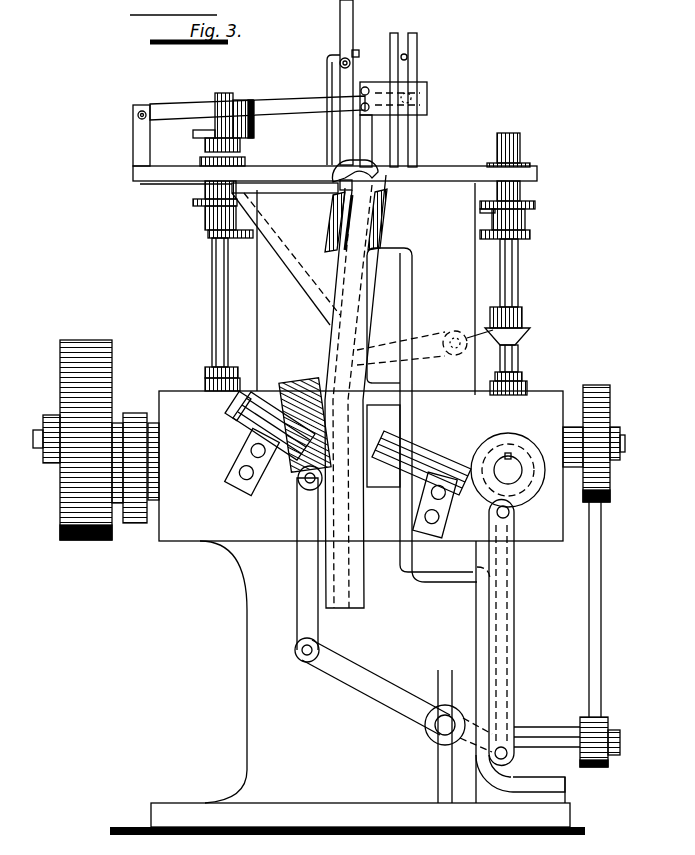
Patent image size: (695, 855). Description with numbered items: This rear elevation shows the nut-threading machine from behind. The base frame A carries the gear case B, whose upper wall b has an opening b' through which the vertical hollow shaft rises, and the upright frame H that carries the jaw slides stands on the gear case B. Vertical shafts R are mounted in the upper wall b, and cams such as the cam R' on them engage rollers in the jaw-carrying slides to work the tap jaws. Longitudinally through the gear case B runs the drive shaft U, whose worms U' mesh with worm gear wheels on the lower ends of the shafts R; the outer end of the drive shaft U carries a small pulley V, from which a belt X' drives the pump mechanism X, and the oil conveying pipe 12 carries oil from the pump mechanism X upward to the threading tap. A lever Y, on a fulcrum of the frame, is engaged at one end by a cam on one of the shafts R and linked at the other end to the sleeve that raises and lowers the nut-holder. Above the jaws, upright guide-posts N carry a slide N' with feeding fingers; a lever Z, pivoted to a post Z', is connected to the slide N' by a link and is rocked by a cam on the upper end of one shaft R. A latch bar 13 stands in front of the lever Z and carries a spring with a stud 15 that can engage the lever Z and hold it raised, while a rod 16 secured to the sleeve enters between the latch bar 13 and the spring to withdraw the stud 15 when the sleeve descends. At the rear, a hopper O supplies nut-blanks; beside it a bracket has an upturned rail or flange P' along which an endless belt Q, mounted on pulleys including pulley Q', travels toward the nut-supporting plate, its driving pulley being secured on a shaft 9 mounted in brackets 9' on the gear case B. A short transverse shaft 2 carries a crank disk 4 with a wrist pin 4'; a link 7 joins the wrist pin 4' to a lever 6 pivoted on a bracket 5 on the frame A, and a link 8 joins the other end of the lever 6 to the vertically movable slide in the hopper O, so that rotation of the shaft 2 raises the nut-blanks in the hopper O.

The latch bar 13 is at (353, 18).
The rod 16 is at (357, 50).
The stud 15 is at (351, 63).
The upright guide-posts N is at (407, 83).
The slide N' is at (407, 140).
The upper wall of the gear case b is at (389, 164).
The lever Z is at (257, 150).
The post Z' is at (318, 144).
The rail or flange P' is at (377, 191).
The pulley Q' is at (391, 222).
The endless belt Q is at (395, 219).
The upright frame H is at (385, 391).
The cam R' is at (365, 210).
The vertical shafts R is at (358, 264).
The hopper O is at (286, 287).
The oil conveying pipe 12 is at (413, 303).
The lever Y is at (495, 345).
The worms U' is at (138, 491).
The shaft 9 is at (245, 461).
The gear case B is at (421, 452).
The opening b' is at (361, 466).
The crank disk 4 is at (508, 458).
The short transverse shaft 2 is at (512, 478).
The wrist pin 4' is at (522, 521).
The brackets 9' is at (445, 506).
The small pulley V is at (612, 403).
The drive shaft U is at (629, 443).
The link 8 is at (308, 564).
The link 7 is at (511, 633).
The base frame A is at (347, 686).
The lever 6 is at (397, 696).
The pump mechanism X is at (567, 728).
The belt X' is at (615, 609).
The bracket 5 is at (437, 760).